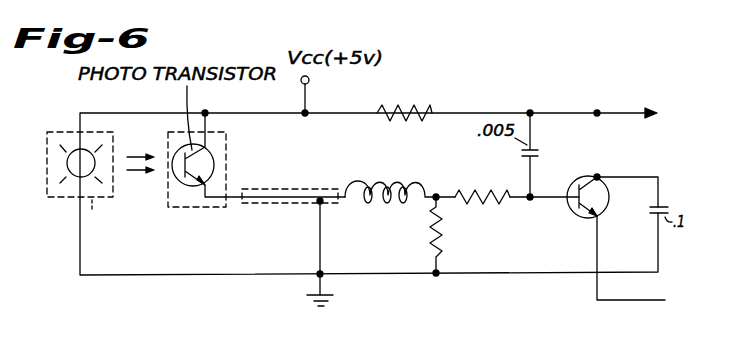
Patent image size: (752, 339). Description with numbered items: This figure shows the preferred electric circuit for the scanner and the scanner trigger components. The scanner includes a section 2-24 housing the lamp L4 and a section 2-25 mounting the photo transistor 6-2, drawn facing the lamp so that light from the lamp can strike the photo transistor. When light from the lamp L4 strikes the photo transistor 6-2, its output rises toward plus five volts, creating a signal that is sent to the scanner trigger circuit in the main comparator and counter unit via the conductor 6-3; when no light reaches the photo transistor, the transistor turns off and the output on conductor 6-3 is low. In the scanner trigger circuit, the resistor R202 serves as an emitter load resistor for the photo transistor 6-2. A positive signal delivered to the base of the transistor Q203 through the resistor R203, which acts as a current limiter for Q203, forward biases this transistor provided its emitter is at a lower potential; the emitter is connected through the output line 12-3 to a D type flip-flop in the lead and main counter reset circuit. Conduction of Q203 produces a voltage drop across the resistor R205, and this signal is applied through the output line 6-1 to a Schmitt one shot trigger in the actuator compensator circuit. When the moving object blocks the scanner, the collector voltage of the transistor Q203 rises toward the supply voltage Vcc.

The lamp L4 is at (68, 169).
The section housing lamp 2-24 is at (111, 219).
The section mounting the photo transistor 2-25 is at (170, 208).
The output line 6-1 is at (622, 110).
The photo transistor 6-2 is at (215, 150).
The conductor 6-3 is at (233, 197).
The output line 12-3 is at (620, 303).
The resistor R205 is at (399, 99).
The resistor R203 is at (467, 190).
The emitter load resistor R202 is at (432, 233).
The transistor Q203 is at (572, 208).